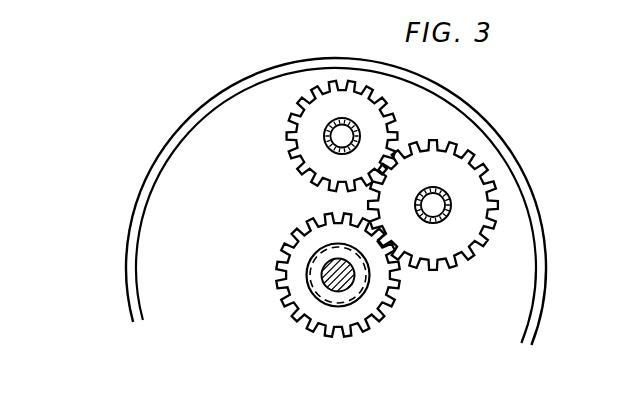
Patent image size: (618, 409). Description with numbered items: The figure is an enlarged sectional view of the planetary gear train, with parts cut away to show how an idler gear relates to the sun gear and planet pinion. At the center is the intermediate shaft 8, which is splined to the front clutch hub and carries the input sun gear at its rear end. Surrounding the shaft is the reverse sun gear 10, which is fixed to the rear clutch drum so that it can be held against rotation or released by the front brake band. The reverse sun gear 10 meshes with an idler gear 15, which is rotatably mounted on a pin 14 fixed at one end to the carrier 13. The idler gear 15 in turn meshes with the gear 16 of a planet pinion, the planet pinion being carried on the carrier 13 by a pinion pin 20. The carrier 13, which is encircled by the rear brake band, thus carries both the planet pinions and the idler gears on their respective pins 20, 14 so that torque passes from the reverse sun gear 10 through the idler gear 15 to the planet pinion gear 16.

The carrier 13 is at (229, 88).
The gear of planet pinion 16 is at (304, 159).
The pinion pin 20 is at (326, 136).
The pin 14 is at (438, 208).
The idler gear 15 is at (440, 264).
The reverse sun gear 10 is at (297, 300).
The intermediate shaft 8 is at (326, 276).